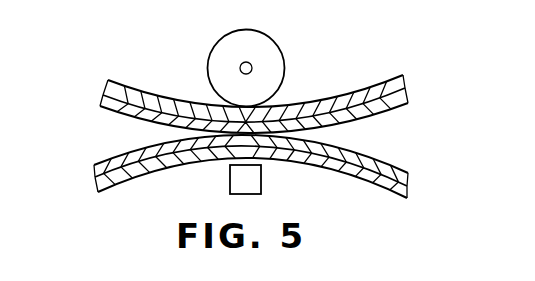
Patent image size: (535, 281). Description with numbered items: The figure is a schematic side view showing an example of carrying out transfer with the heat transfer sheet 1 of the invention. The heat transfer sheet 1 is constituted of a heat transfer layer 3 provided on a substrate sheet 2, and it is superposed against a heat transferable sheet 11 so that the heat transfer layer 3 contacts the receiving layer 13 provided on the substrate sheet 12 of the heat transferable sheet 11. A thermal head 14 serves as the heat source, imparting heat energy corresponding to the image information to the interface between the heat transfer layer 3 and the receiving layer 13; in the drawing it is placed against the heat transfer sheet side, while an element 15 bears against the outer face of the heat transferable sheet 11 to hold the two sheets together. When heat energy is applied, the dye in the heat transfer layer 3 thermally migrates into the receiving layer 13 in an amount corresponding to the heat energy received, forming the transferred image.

The heat transfer sheet 1 is at (258, 175).
The substrate sheet 2 is at (407, 192).
The heat transfer layer 3 is at (406, 173).
The heat transferable sheet 11 is at (264, 95).
The substrate sheet 12 is at (405, 82).
The receiving layer 13 is at (408, 103).
The thermal head 14 is at (262, 178).
The pressure roller 15 is at (283, 53).